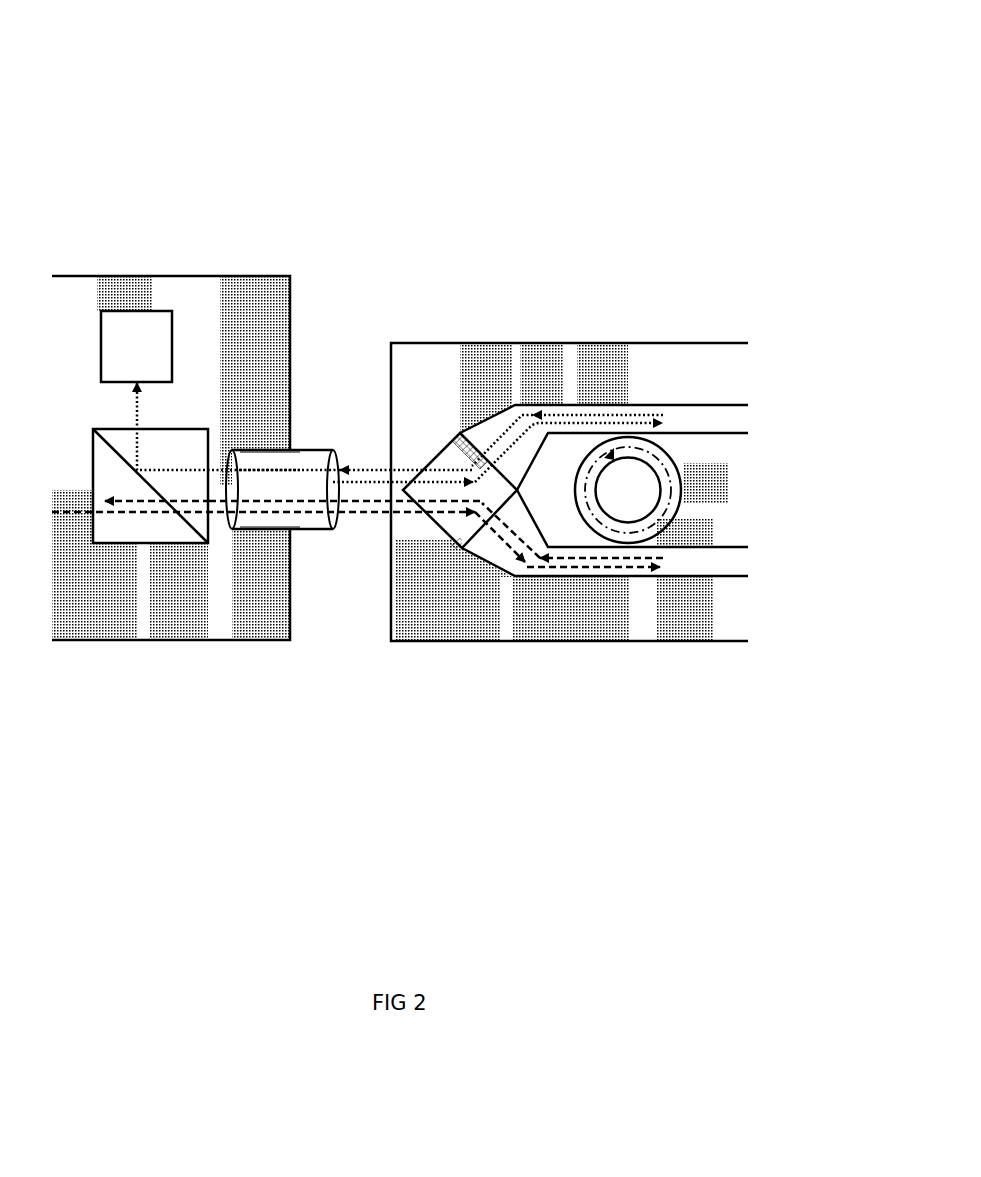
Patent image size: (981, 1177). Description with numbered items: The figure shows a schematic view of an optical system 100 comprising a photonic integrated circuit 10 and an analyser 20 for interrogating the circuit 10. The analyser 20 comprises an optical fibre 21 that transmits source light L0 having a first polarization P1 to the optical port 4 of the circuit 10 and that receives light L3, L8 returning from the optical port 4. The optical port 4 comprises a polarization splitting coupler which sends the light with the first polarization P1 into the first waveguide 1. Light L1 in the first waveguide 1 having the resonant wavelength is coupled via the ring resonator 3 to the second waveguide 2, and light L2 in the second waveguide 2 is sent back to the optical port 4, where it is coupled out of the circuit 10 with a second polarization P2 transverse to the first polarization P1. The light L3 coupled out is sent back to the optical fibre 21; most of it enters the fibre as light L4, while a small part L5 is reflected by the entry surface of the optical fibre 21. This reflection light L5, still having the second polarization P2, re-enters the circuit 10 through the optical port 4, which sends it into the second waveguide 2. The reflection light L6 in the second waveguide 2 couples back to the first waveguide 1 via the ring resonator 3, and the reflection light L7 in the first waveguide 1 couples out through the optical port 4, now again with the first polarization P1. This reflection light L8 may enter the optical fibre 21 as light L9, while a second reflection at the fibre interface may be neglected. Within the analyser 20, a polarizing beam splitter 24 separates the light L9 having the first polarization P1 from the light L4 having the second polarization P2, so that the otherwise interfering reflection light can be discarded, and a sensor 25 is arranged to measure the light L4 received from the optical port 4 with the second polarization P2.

The optical system 100 is at (170, 77).
The analyser 20 is at (280, 250).
The photonic integrated circuit 10 is at (427, 248).
The sensor 25 is at (136, 305).
The polarizing beam splitter 24 is at (158, 548).
The optical fibre 21 is at (307, 540).
The first polarization P1 is at (265, 516).
The second polarization P2 is at (268, 465).
The second waveguide 2 is at (612, 390).
The first waveguide 1 is at (617, 590).
The optical port 4 is at (450, 553).
The ring resonator 3 is at (673, 538).
The source light L0 is at (353, 512).
The light in the first waveguide L1 is at (508, 547).
The light in the second waveguide L2 is at (549, 415).
The light coupled out from the circuit L3 is at (380, 470).
The light entering the optical fibre L4 is at (303, 468).
The reflection light L5 is at (362, 480).
The reflection light in the second waveguide L6 is at (510, 448).
The reflection light in the first waveguide L7 is at (565, 558).
The reflection light coupled out with first polarization L8 is at (378, 503).
The reflection light received by the analyser L9 is at (130, 502).